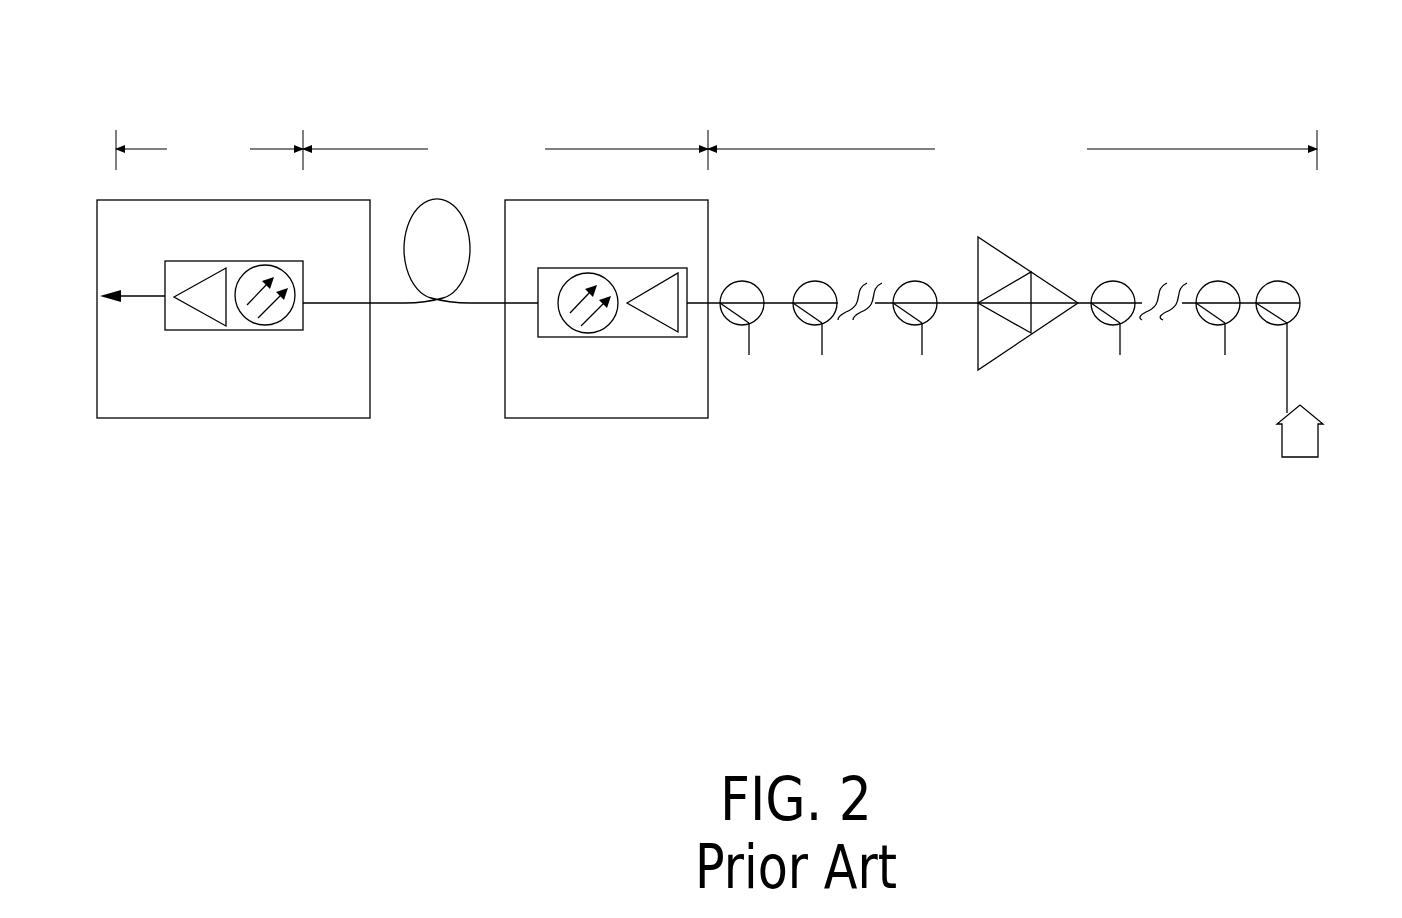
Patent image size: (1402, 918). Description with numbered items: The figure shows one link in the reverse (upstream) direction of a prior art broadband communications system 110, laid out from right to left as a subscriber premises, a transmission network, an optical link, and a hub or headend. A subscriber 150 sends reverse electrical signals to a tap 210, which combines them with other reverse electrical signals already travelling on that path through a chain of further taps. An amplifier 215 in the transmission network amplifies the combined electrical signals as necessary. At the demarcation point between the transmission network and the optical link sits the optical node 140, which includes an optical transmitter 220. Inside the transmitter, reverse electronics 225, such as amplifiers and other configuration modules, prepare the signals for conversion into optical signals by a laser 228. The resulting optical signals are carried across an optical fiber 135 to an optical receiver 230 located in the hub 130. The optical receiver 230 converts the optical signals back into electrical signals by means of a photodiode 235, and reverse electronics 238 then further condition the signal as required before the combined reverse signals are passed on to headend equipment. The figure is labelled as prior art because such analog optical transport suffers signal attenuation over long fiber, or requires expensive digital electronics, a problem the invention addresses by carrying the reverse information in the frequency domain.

The broadband communications system 110 is at (1155, 36).
The hub 130 is at (168, 224).
The optical fiber 135 is at (462, 217).
The optical node 140 is at (558, 225).
The subscriber 150 is at (1313, 413).
The tap 210 is at (1280, 282).
The amplifier 215 is at (1002, 252).
The optical transmitter 220 is at (647, 268).
The reverse electronics 225 is at (680, 337).
The laser 228 is at (570, 327).
The optical receiver 230 is at (262, 261).
The photodiode 235 is at (288, 313).
The reverse electronics 238 is at (200, 307).